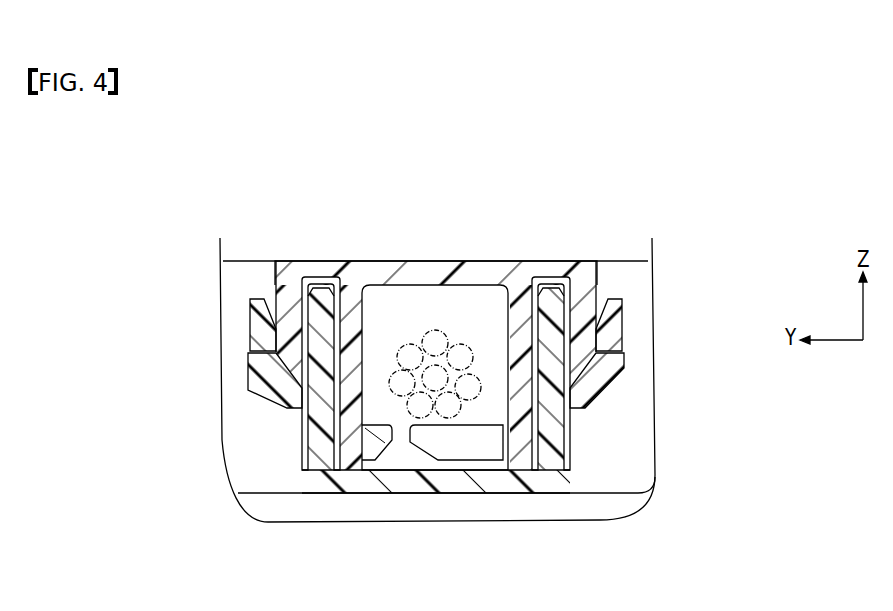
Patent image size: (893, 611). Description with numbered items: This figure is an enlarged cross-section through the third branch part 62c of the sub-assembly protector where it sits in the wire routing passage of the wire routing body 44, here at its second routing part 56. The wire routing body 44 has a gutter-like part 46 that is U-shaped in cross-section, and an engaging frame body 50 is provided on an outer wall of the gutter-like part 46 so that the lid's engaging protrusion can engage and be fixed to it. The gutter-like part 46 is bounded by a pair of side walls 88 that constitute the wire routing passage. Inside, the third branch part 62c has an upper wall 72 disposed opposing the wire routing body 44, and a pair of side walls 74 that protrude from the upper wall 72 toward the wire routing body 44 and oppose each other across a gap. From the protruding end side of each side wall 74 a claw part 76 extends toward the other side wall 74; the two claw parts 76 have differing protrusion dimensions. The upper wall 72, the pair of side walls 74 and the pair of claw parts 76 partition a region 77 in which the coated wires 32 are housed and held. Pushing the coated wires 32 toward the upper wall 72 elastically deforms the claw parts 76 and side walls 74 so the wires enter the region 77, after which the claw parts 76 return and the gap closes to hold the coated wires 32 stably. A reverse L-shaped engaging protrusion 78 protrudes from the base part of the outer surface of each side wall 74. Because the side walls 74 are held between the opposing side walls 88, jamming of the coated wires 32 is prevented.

The third branch part 62c is at (443, 216).
The upper wall 72 is at (437, 280).
The side wall 74 is at (522, 345).
The claw part 76 is at (383, 433).
The region 77 is at (402, 328).
The engaging protrusion 78 is at (258, 404).
The side wall 88 is at (320, 312).
The engaging frame body 50 is at (250, 325).
The coated wire 32 is at (432, 340).
The wire routing body 44 is at (436, 524).
The second routing part 56 is at (430, 505).
The gutter-like part 46 is at (504, 514).